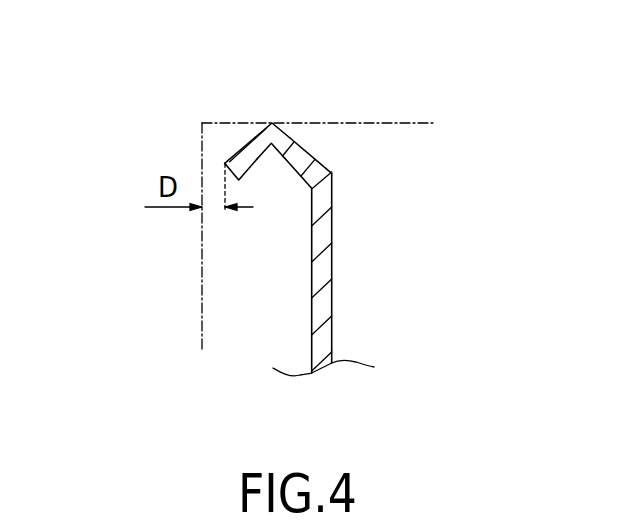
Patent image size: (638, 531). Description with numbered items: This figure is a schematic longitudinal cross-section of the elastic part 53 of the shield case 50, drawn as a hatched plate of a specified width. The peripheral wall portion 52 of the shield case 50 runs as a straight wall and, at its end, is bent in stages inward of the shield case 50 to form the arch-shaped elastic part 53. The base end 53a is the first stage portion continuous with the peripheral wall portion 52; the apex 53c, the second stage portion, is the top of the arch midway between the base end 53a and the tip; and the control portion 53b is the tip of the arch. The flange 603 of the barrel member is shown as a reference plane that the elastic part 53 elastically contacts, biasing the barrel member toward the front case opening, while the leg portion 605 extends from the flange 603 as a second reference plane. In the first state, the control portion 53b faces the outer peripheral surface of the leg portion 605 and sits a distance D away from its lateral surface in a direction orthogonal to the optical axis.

The shield case 50 is at (310, 188).
The peripheral wall portion 52 is at (323, 243).
The elastic part 53 is at (376, 55).
The base end 53a is at (334, 158).
The control portion 53b is at (225, 162).
The apex 53c is at (281, 122).
The flange 603 is at (406, 123).
The leg portion 605 is at (202, 278).